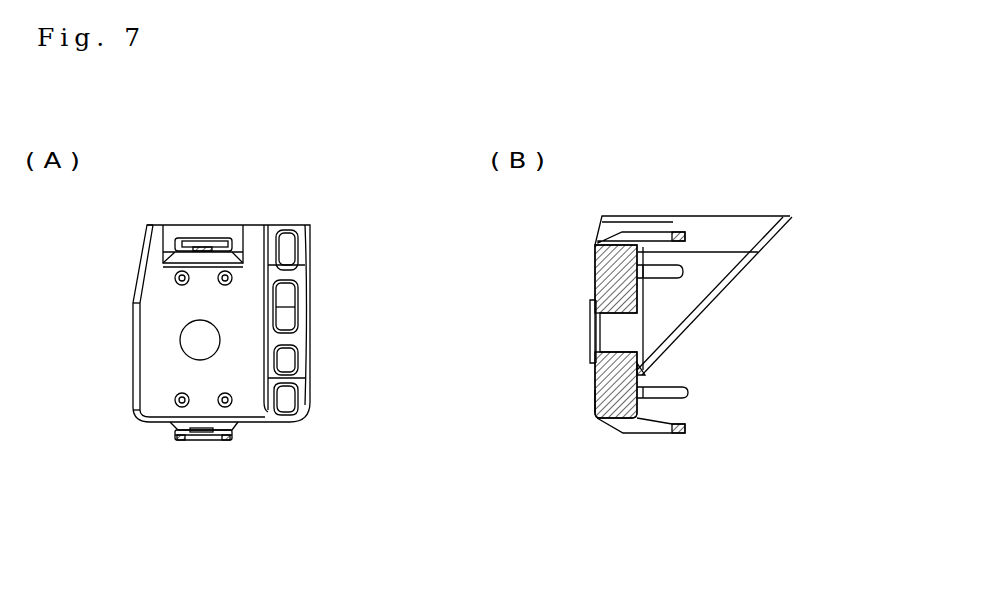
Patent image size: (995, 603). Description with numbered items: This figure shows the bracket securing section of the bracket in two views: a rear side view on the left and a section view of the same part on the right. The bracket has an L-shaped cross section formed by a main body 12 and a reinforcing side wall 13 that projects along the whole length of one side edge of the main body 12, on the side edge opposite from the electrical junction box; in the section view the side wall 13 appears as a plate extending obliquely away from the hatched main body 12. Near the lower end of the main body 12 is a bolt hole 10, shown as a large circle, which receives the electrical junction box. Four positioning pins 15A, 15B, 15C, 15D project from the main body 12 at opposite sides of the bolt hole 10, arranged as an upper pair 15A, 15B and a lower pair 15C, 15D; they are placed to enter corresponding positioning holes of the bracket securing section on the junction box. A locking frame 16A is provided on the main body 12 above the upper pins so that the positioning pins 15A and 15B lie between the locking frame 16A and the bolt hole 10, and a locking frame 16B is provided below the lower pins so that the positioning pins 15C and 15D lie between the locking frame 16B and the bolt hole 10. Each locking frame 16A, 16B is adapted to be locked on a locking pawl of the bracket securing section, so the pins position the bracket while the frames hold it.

The bolt hole 10 is at (193, 343).
The main body 12 is at (152, 258).
The reinforcing side wall 13 is at (308, 250).
The positioning pin 15A is at (182, 271).
The positioning pin 15B is at (225, 271).
The positioning pin 15C is at (178, 405).
The positioning pin 15D is at (233, 403).
The locking frame 16A is at (197, 243).
The locking frame 16B is at (202, 443).